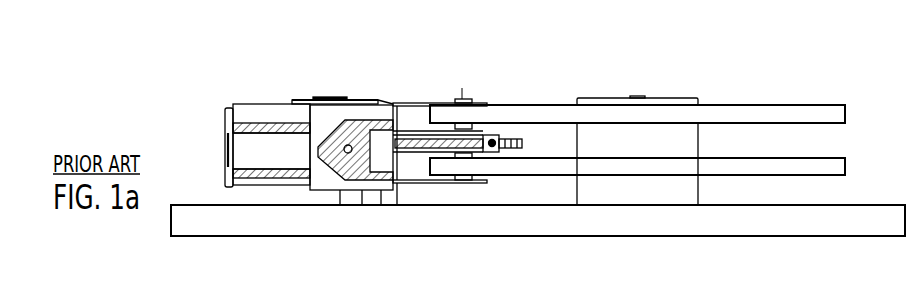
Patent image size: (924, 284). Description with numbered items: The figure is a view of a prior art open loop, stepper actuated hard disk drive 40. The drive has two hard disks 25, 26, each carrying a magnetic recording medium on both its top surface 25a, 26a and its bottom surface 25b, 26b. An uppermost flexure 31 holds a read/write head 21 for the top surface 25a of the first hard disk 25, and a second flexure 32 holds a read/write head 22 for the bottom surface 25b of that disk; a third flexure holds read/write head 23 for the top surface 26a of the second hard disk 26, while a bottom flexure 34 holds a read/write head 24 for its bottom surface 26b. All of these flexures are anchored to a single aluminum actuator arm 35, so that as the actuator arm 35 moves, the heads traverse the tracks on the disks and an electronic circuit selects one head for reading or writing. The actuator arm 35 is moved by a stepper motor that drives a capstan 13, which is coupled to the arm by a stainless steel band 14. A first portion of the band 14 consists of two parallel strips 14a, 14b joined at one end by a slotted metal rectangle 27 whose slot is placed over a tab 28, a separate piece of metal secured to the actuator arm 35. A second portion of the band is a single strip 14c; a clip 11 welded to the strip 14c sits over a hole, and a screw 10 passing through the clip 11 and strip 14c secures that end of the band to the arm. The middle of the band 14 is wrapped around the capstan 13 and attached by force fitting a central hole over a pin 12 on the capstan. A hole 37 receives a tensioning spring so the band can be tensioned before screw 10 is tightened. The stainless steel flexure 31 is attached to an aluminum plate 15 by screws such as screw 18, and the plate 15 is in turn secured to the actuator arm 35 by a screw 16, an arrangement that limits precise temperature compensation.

The screw 10 is at (497, 150).
The clip 11 is at (511, 136).
The pin 12 is at (344, 146).
The capstan 13 is at (380, 188).
The band 14 is at (348, 167).
The parallel strip 14a is at (280, 134).
The parallel strip 14b is at (261, 170).
The single strip 14c is at (425, 131).
The aluminum plate 15 is at (297, 102).
The screw 16 is at (307, 101).
The screw 18 is at (332, 97).
The read/write head 21 is at (465, 87).
The read/write head 22 is at (472, 124).
The read/write head 23 is at (458, 162).
The read/write head 24 is at (466, 182).
The first hard disk 25 is at (848, 109).
The top surface 25a is at (737, 104).
The bottom surface 25b is at (744, 124).
The second hard disk 26 is at (848, 161).
The top surface 26a is at (797, 157).
The bottom surface 26b is at (772, 176).
The metal rectangle 27 is at (228, 176).
The tab 28 is at (227, 148).
The uppermost flexure 31 is at (378, 102).
The second flexure 32 is at (426, 107).
The bottom flexure 34 is at (412, 188).
The actuator arm 35 is at (245, 109).
The hole 37 is at (526, 145).
The hard disk drive 40 is at (604, 79).